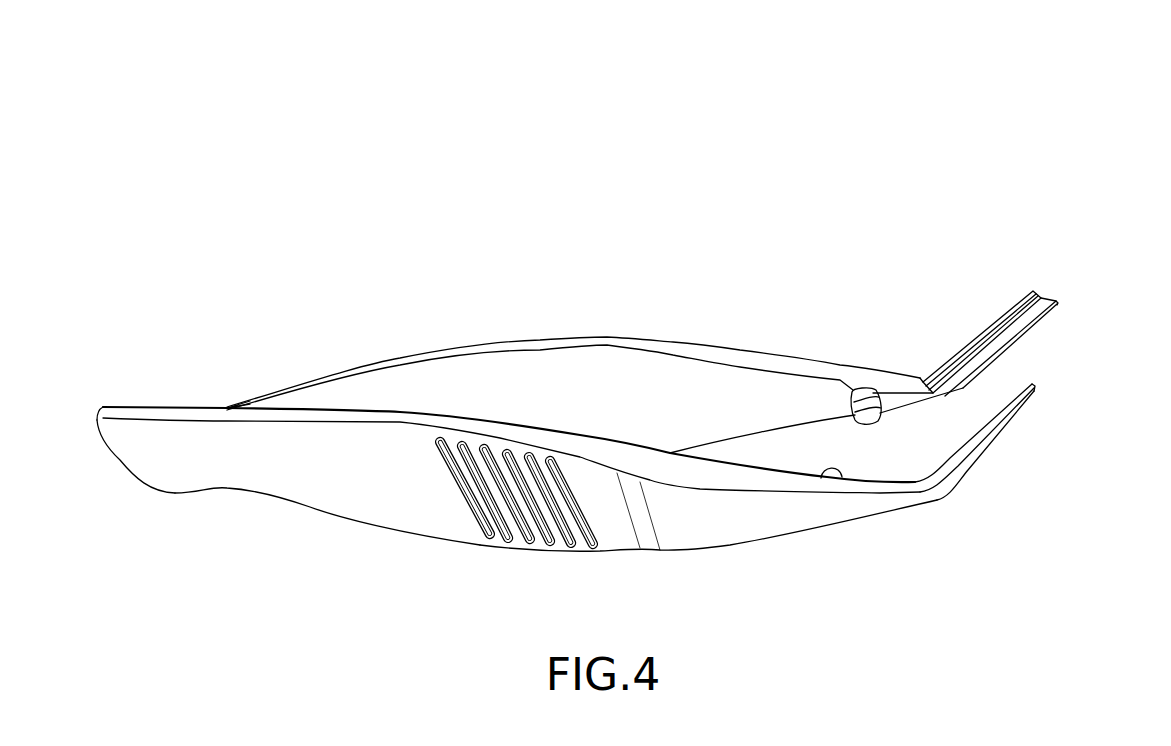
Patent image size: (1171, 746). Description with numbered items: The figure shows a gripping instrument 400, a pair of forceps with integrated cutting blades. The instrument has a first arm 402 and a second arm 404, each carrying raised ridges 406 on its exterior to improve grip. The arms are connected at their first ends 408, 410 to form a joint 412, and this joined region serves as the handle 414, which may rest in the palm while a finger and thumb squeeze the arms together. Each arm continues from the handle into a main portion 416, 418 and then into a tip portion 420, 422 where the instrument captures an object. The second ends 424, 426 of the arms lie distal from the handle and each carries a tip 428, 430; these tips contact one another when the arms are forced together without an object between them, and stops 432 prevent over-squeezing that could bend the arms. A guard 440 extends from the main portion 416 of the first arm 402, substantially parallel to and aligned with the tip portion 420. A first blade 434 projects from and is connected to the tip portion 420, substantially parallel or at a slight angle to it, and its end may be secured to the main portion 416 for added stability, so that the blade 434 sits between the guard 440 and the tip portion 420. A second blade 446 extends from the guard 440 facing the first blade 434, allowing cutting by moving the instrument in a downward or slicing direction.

The gripping instrument 400 is at (1057, 138).
The first arm 402 is at (632, 367).
The second arm 404 is at (612, 542).
The ridges 406 is at (490, 532).
The first end of first arm 408 is at (128, 384).
The first end of second arm 410 is at (213, 528).
The joint 412 is at (229, 406).
The handle 414 is at (128, 460).
The main portion of first arm 416 is at (452, 368).
The main portion of second arm 418 is at (294, 497).
The tip portion of first arm 420 is at (1008, 347).
The tip portion of second arm 422 is at (980, 446).
The second end of first arm 424 is at (1050, 278).
The second end of second arm 426 is at (958, 520).
The tip of first arm 428 is at (1058, 303).
The tip of second arm 430 is at (1036, 388).
The stops 432 is at (862, 390).
The first blade 434 is at (1030, 323).
The guard 440 is at (1006, 308).
The second blade 446 is at (968, 350).